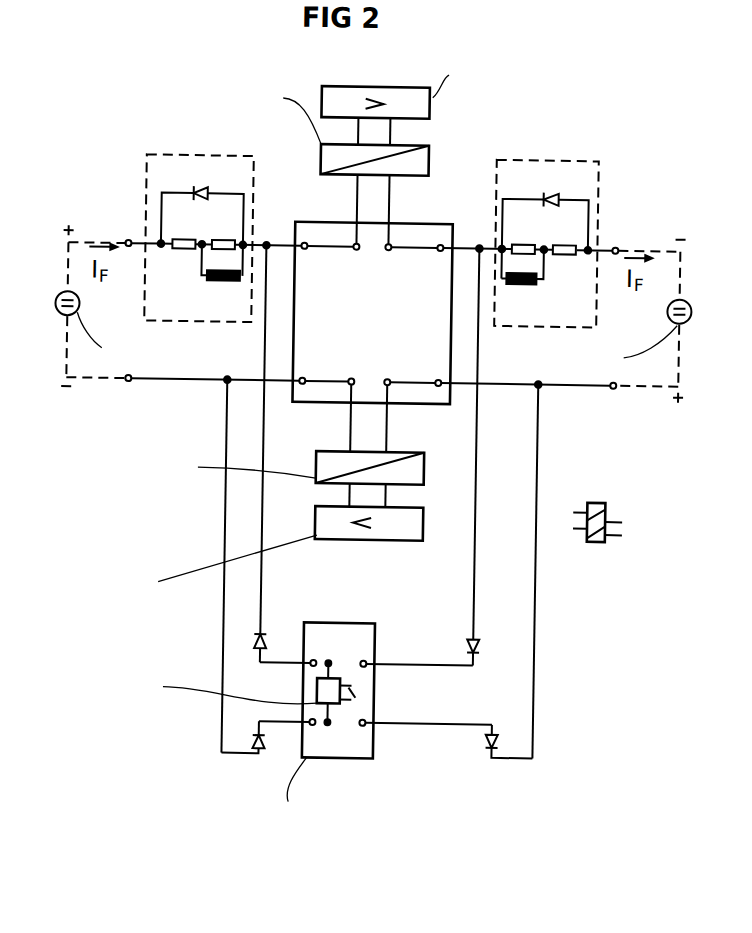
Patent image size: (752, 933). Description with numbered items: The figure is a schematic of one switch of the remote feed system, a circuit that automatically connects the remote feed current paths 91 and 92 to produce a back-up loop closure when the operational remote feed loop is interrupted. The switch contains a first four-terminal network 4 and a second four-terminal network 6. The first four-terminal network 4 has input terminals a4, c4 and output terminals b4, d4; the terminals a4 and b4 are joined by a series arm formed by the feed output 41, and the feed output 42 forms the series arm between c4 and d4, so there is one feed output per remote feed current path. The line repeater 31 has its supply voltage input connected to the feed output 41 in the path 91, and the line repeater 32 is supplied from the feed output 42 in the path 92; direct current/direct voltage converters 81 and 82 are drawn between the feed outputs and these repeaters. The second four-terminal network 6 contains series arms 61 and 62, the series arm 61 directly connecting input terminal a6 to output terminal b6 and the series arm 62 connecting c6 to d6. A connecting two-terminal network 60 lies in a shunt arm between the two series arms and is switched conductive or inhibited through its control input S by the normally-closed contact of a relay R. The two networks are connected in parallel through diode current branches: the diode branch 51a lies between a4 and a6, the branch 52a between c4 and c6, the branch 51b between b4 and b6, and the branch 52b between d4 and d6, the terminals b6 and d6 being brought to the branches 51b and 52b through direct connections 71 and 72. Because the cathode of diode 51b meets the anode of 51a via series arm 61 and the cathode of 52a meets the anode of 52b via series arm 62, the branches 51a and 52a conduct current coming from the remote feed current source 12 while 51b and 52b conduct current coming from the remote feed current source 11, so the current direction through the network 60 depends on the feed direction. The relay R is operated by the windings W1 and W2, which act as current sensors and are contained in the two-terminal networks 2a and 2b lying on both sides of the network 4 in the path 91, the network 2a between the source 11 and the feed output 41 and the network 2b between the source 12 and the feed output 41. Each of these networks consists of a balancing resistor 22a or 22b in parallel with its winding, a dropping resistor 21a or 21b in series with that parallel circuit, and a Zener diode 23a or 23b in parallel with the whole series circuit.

The two-terminal network 2a is at (143, 160).
The two-terminal network 2b is at (595, 160).
The first four-terminal network 4 is at (412, 226).
The second four-terminal network 6 is at (334, 759).
The remote feed current source 11 is at (123, 310).
The remote feed current source 12 is at (614, 318).
The dropping resistor 21a is at (182, 231).
The dropping resistor 21b is at (565, 235).
The balancing resistor 22a is at (225, 231).
The balancing resistor 22b is at (519, 234).
The Zener diode 23a is at (204, 195).
The Zener diode 23b is at (552, 195).
The line repeater 31 is at (437, 94).
The line repeater 32 is at (240, 558).
The feed output 41 is at (372, 218).
The feed output 42 is at (368, 408).
The diode current branch 51a is at (273, 648).
The diode current branch 51b is at (488, 650).
The diode current branch 52a is at (257, 740).
The diode current branch 52b is at (491, 742).
The connecting two-terminal network 60 is at (322, 691).
The series arm 61 is at (332, 664).
The series arm 62 is at (333, 723).
The direct connection 71 is at (410, 668).
The direct connection 72 is at (423, 722).
The direct current/direct voltage converter 81 is at (419, 166).
The direct current/direct voltage converter 82 is at (419, 476).
The remote feed current path 91 is at (272, 246).
The remote feed current path 92 is at (283, 384).
The input terminal a4 is at (308, 265).
The output terminal b4 is at (438, 266).
The input terminal c4 is at (307, 367).
The output terminal d4 is at (437, 368).
The input terminal a6 is at (316, 649).
The output terminal b6 is at (357, 650).
The input terminal c6 is at (314, 739).
The output terminal d6 is at (358, 740).
The winding W1 is at (221, 279).
The winding W2 is at (522, 283).
The relay R is at (590, 556).
The control input S is at (360, 698).